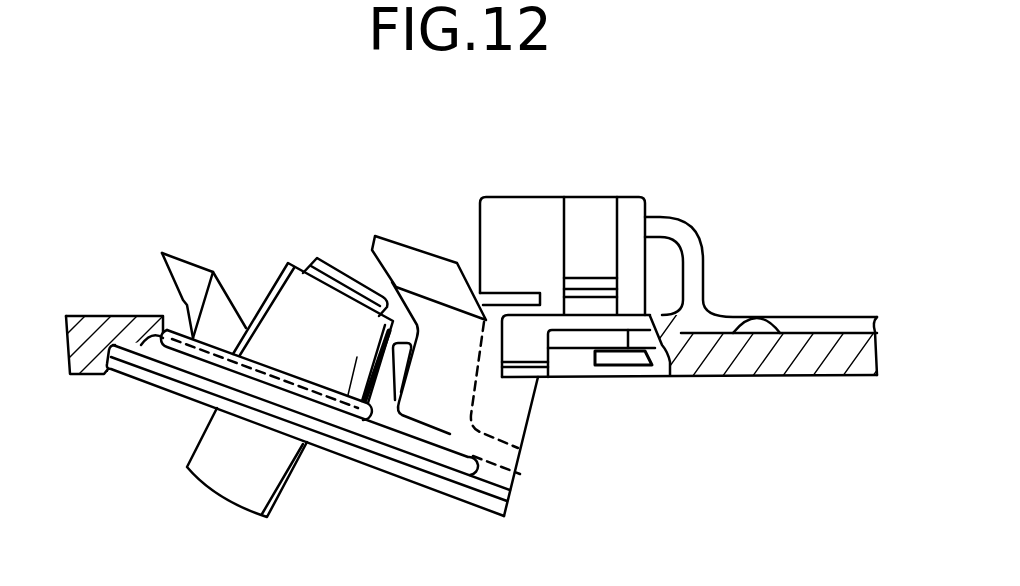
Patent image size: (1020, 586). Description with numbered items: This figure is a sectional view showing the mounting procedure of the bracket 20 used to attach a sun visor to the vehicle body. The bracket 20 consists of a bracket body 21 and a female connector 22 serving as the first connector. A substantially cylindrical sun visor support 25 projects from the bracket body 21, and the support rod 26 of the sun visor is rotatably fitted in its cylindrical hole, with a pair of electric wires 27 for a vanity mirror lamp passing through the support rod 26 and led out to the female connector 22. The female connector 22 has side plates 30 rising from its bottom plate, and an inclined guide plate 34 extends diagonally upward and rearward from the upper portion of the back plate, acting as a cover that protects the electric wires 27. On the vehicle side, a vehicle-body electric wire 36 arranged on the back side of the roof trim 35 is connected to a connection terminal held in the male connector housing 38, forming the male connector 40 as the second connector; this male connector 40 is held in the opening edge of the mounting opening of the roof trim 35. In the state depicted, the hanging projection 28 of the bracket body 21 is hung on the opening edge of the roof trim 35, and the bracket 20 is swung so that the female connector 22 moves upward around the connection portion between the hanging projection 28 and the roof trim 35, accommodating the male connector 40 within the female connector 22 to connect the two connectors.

The bracket 20 is at (295, 218).
The bracket body 21 is at (431, 494).
The female connector 22 is at (549, 450).
The sun visor support 25 is at (268, 303).
The support rod 26 is at (277, 478).
The electric wires 27 is at (356, 266).
The hanging projection 28 is at (182, 262).
The side plates 30 is at (527, 403).
The inclined guide plate 34 is at (451, 266).
The roof trim 35 is at (793, 356).
The electric wire 36 is at (697, 248).
The male connector housing 38 is at (510, 206).
The male connector 40 is at (558, 183).